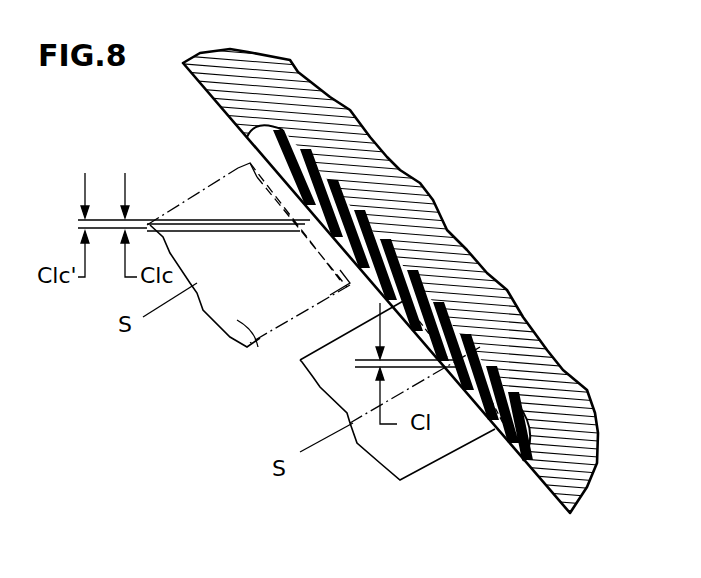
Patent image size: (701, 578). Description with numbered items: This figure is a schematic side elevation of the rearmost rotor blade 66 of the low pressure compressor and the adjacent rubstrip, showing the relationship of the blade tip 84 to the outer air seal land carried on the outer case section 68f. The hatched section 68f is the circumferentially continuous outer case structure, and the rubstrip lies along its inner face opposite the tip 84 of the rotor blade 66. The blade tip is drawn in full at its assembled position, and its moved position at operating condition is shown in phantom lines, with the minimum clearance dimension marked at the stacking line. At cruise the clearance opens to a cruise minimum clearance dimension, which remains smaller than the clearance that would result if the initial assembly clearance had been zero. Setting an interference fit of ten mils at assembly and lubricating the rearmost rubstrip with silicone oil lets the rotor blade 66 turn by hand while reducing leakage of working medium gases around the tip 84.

The outer case section 68f is at (292, 92).
The tip of the rotor blade 84 is at (485, 345).
The rotor blade 66 is at (255, 350).